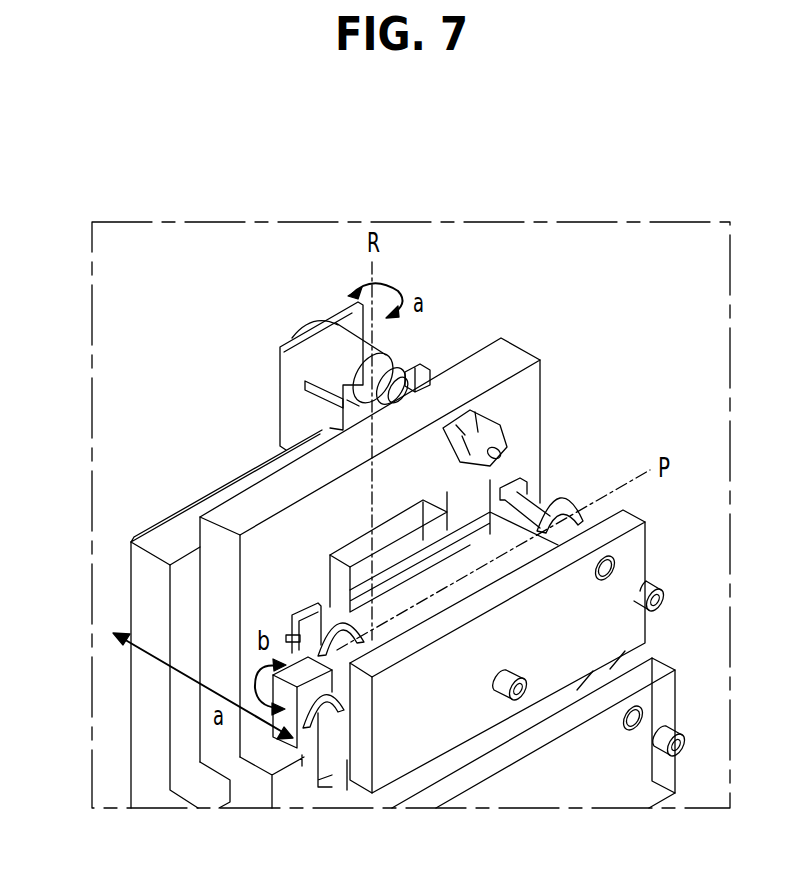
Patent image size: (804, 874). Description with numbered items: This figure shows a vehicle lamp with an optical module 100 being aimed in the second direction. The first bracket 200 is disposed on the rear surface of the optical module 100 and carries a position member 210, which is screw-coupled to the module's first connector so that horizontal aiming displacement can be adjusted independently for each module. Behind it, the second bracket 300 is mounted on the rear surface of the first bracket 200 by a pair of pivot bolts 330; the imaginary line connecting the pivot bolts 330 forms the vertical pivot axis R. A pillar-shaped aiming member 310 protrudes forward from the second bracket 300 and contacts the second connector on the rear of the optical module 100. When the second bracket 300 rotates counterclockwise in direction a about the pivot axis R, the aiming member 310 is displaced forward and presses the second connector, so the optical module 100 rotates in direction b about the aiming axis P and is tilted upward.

The optical module 100 is at (623, 628).
The first bracket 200 is at (548, 378).
The position member 210 is at (303, 626).
The second bracket 300 is at (184, 504).
The aiming member 310 is at (310, 730).
The pivot bolt 330 is at (337, 353).